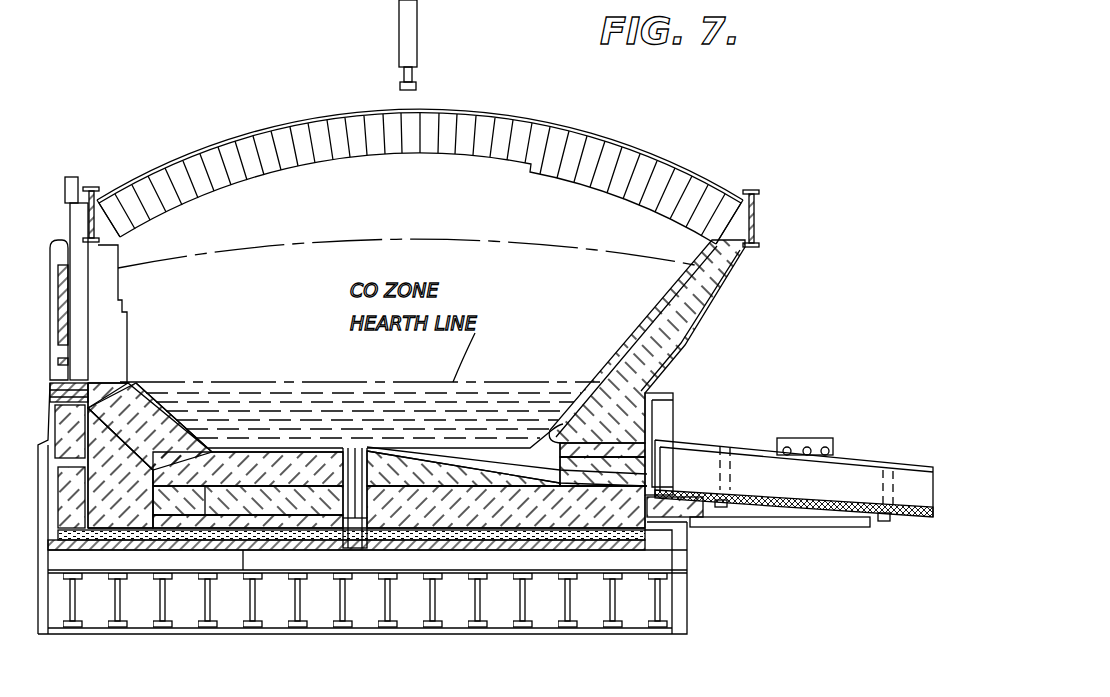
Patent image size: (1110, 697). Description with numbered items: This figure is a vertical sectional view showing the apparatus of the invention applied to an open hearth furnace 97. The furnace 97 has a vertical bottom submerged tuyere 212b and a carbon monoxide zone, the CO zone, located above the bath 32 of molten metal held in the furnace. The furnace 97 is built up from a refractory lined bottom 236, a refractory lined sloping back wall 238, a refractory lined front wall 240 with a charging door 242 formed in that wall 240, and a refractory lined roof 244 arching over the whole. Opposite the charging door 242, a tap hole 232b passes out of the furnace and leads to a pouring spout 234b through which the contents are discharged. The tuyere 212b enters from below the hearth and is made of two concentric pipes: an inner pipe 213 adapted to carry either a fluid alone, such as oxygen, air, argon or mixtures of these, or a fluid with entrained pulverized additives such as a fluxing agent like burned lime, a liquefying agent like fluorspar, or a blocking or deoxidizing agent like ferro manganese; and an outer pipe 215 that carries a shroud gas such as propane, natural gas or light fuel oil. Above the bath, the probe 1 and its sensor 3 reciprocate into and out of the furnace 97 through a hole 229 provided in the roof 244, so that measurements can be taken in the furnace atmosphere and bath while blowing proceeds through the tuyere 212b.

The probe 1 is at (398, 38).
The sensor 3 is at (398, 83).
The open hearth furnace 97 is at (665, 154).
The refractory lined roof 244 is at (276, 143).
The hole 229 is at (418, 122).
The refractory lined front wall 240 is at (98, 262).
The charging door 242 is at (68, 303).
The refractory lined sloping back wall 238 is at (703, 323).
The refractory lined bottom 236 is at (258, 447).
The outer pipe 215 is at (346, 448).
The inner pipe 213 is at (355, 447).
The bath 32 is at (473, 400).
The tap hole 232b is at (650, 467).
The pouring spout 234b is at (903, 508).
The vertical bottom submerged tuyere 212b is at (358, 552).